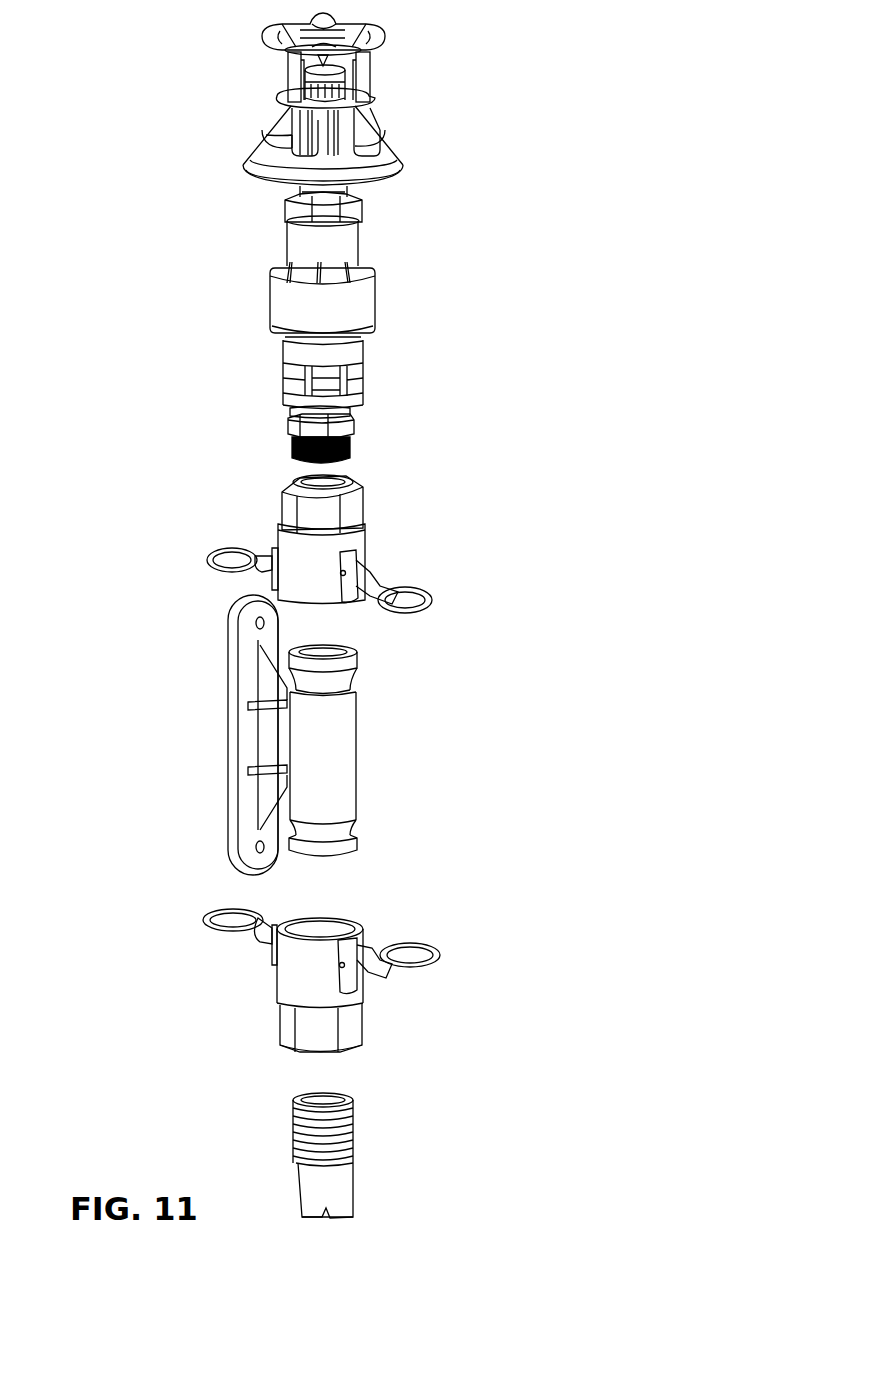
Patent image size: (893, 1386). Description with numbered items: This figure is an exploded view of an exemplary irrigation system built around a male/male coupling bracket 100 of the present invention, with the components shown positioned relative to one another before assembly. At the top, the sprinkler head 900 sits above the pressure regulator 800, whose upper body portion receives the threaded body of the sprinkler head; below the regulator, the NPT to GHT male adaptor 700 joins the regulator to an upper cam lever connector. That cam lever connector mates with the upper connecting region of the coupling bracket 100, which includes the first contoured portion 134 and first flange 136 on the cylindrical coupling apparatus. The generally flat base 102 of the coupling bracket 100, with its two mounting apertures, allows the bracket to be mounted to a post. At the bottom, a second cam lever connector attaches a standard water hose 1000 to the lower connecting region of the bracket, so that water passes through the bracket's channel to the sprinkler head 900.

The sprinkler head 900 is at (407, 132).
The pressure regulator 800 is at (390, 300).
The NPT to GHT male adaptor 700 is at (360, 427).
The base 102 is at (230, 692).
The coupling bracket 100 is at (407, 752).
The first contoured portion 134 is at (355, 680).
The first flange 136 is at (355, 825).
The standard water hose 1000 is at (373, 1173).